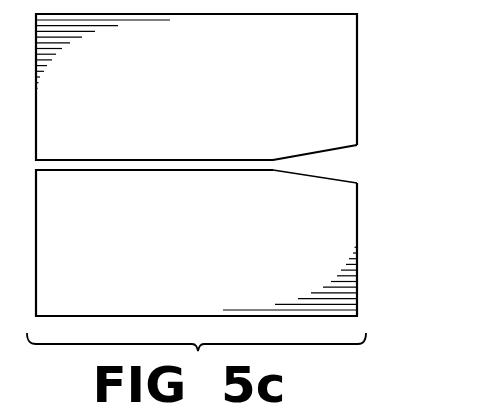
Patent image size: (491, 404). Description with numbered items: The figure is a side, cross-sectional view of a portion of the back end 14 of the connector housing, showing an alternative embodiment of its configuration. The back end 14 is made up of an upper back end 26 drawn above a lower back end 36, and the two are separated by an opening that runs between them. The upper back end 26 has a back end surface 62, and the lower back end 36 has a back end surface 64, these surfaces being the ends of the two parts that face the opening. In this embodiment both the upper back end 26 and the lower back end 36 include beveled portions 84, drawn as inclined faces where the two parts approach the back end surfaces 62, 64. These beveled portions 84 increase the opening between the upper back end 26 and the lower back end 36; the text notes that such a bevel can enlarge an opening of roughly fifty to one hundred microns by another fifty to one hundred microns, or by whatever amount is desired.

The back end 14 is at (235, 164).
The upper back end 26 is at (186, 98).
The lower back end 36 is at (186, 254).
The back end surface 62 is at (357, 83).
The back end surface 64 is at (357, 250).
The beveled portion 84 is at (357, 147).